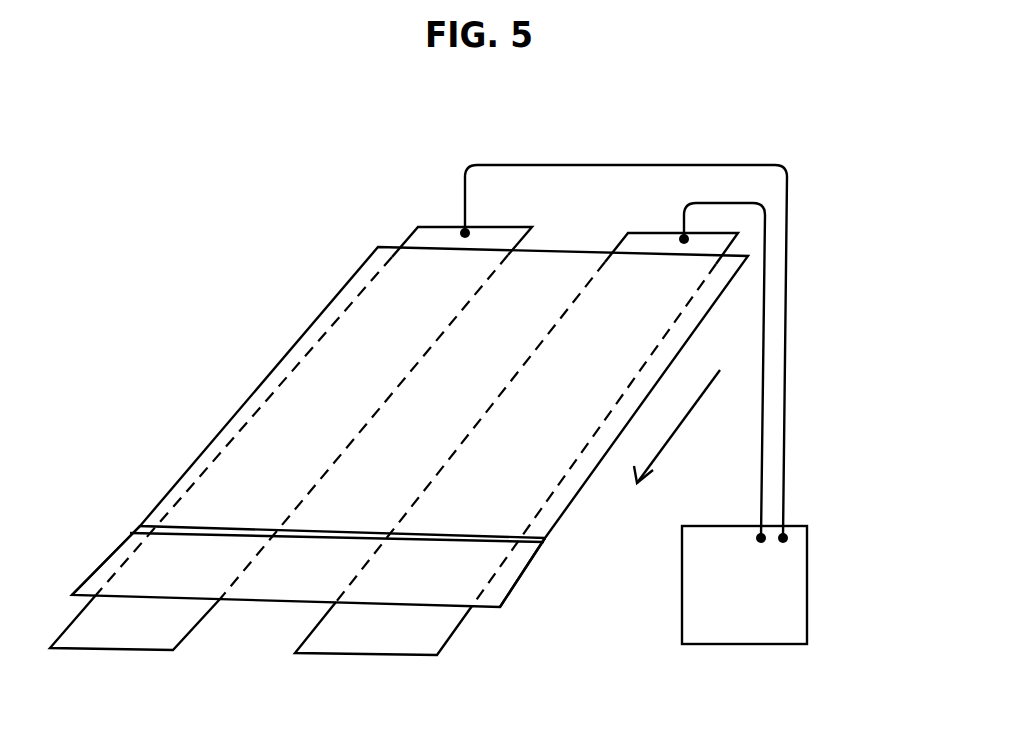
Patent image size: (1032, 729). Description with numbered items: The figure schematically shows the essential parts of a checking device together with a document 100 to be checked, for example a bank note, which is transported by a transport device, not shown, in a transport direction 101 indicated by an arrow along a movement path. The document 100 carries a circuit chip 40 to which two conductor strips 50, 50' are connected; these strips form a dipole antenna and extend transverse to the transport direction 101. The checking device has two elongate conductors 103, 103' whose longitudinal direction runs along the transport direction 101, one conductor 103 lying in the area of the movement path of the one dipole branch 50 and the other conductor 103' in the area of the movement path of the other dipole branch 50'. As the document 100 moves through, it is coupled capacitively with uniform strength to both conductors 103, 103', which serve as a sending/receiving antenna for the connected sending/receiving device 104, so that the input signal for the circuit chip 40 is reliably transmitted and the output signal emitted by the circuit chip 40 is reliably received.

The document 100 is at (250, 395).
The circuit chip 40 is at (318, 534).
The conductor strip 50 is at (107, 505).
The conductor strip 50' is at (536, 584).
The elongate conductor 103 is at (533, 338).
The elongate conductor 103' is at (758, 370).
The transport direction 101 is at (682, 418).
The sending/receiving device 104 is at (680, 600).